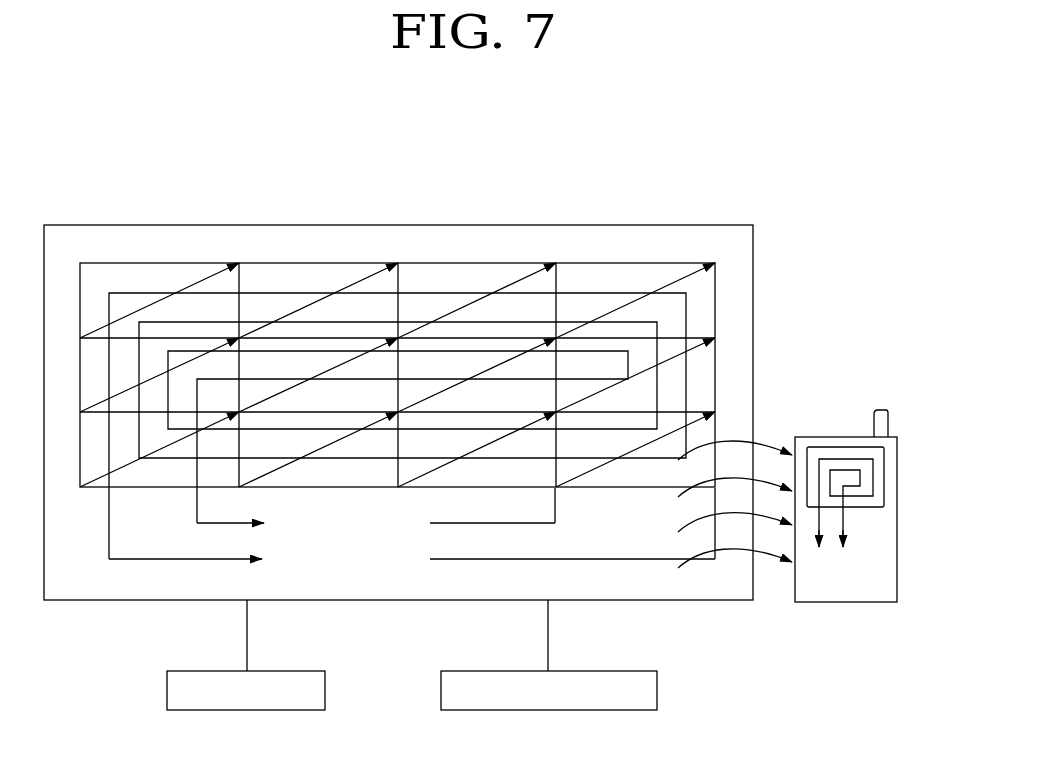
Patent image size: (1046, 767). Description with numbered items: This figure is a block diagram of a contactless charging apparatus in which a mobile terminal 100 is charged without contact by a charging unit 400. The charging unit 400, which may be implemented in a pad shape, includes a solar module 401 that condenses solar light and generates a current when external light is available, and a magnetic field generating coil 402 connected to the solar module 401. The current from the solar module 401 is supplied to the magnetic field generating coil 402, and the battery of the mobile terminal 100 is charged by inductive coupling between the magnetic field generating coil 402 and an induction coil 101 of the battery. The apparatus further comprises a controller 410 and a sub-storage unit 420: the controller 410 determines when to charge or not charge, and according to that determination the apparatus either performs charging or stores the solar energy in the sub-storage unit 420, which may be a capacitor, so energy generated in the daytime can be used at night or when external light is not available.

The charging unit 400 is at (486, 225).
The solar module 401 is at (353, 263).
The magnetic field generating coil 402 is at (287, 293).
The controller 410 is at (167, 690).
The sub-storage unit 420 is at (657, 690).
The mobile terminal 100 is at (814, 437).
The induction coil 101 is at (858, 447).